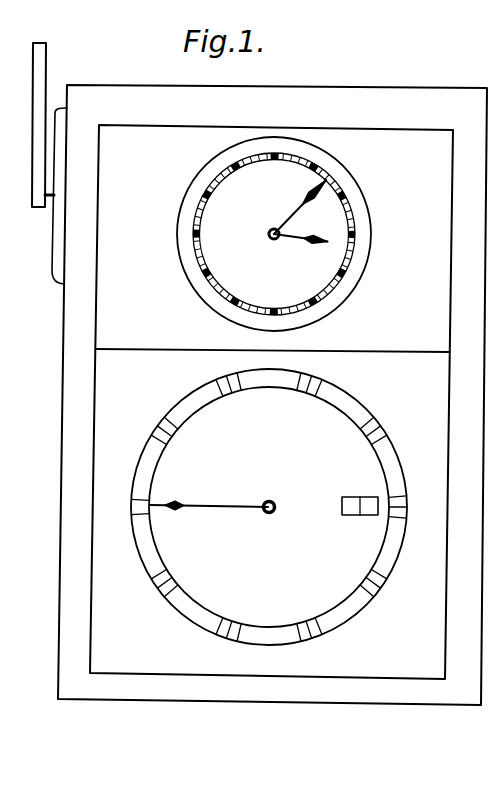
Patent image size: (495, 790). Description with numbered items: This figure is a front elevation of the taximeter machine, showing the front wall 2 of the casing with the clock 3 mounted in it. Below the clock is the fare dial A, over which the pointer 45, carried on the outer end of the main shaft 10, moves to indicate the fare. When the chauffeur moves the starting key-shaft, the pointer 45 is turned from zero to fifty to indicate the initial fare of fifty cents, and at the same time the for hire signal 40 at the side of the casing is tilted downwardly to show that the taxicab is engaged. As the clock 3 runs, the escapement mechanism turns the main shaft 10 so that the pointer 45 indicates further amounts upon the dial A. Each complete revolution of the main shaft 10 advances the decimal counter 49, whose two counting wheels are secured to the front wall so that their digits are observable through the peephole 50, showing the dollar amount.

The front wall 2 is at (271, 402).
The clock 3 is at (334, 212).
The main shaft 10 is at (277, 504).
The for hire signal 40 is at (47, 70).
The pointer 45 is at (218, 504).
The decimal counter 49 is at (362, 497).
The peephole 50 is at (342, 516).
The dial A is at (269, 507).